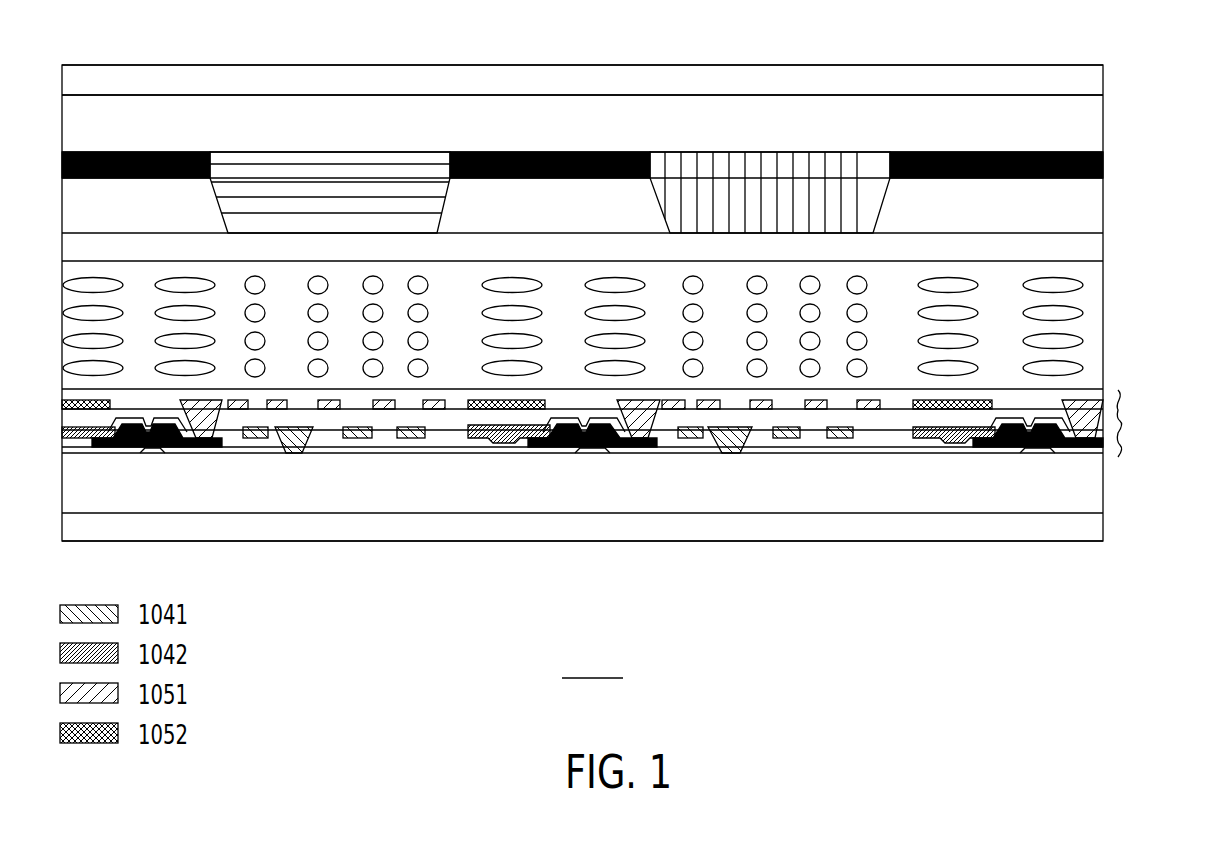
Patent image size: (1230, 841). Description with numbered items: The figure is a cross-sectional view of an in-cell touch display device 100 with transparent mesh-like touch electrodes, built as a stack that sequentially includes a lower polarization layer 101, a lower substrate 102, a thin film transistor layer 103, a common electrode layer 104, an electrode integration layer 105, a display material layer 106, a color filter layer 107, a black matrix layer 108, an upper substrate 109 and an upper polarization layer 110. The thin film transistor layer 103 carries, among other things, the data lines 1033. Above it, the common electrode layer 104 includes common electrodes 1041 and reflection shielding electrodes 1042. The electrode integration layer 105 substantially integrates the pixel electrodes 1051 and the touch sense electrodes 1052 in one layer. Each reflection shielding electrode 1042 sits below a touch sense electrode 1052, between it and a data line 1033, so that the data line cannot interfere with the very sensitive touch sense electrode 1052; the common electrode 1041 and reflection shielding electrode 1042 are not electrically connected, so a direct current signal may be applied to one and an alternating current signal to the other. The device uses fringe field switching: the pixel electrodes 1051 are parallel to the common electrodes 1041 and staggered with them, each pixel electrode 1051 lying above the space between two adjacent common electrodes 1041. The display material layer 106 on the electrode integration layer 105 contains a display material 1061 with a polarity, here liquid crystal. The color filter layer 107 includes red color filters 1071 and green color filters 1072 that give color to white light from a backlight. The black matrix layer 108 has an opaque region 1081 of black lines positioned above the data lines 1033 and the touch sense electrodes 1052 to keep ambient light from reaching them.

The in-cell touch display device 100 is at (592, 660).
The lower polarization layer 101 is at (1098, 523).
The lower substrate 102 is at (1090, 484).
The thin film transistor layer 103 is at (622, 502).
The data line 1033 is at (507, 443).
The common electrode layer 104 is at (622, 495).
The common electrode 1041 is at (832, 438).
The reflection shielding electrode 1042 is at (535, 445).
The electrode integration layer 105 is at (622, 473).
The pixel electrode 1051 is at (762, 409).
The touch sense electrode 1052 is at (466, 409).
The display material layer 106 is at (623, 199).
The display material 1061 is at (612, 283).
The color filter layer 107 is at (623, 135).
The red color filter 1071 is at (763, 163).
The green color filter 1072 is at (323, 163).
The black matrix layer 108 is at (623, 94).
The opaque region 1081 is at (142, 152).
The upper substrate 109 is at (1094, 117).
The upper polarization layer 110 is at (1097, 79).